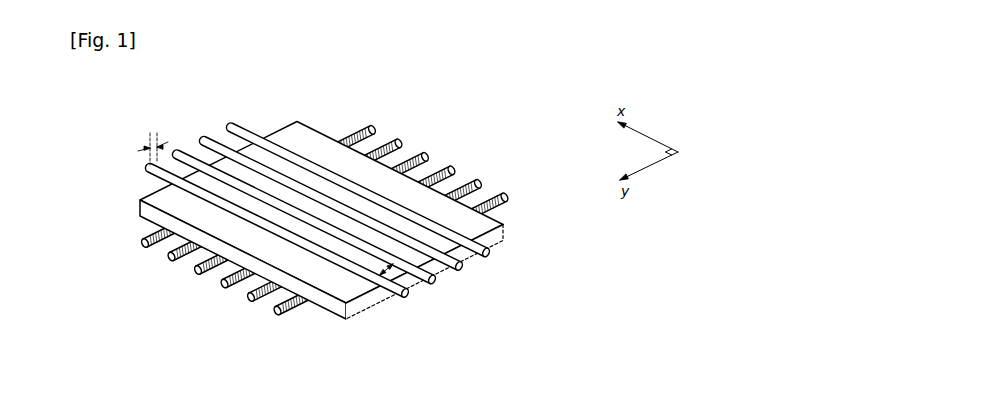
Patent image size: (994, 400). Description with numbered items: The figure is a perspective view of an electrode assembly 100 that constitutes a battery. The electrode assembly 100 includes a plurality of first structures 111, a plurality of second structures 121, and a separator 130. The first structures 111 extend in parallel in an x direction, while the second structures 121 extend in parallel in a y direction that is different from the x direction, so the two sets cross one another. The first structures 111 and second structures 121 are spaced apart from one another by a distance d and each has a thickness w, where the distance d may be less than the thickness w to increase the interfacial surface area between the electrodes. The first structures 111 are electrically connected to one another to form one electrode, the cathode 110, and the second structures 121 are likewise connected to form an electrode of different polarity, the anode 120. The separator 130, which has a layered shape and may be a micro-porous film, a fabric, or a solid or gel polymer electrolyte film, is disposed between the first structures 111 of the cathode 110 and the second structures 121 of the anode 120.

The electrode assembly 100 is at (318, 224).
The cathode 110 is at (346, 231).
The first structures 111 is at (549, 297).
The anode 120 is at (298, 245).
The second structures 121 is at (237, 367).
The separator 130 is at (362, 303).